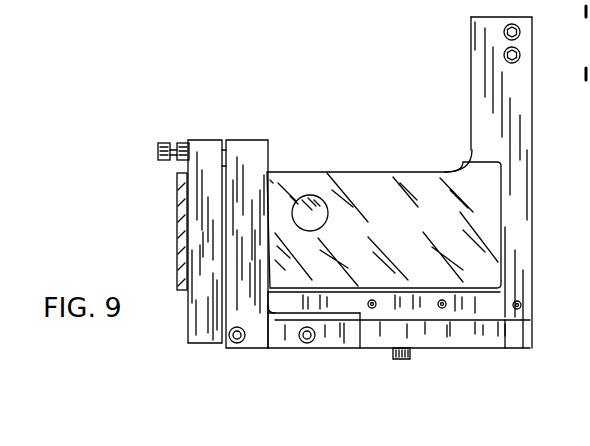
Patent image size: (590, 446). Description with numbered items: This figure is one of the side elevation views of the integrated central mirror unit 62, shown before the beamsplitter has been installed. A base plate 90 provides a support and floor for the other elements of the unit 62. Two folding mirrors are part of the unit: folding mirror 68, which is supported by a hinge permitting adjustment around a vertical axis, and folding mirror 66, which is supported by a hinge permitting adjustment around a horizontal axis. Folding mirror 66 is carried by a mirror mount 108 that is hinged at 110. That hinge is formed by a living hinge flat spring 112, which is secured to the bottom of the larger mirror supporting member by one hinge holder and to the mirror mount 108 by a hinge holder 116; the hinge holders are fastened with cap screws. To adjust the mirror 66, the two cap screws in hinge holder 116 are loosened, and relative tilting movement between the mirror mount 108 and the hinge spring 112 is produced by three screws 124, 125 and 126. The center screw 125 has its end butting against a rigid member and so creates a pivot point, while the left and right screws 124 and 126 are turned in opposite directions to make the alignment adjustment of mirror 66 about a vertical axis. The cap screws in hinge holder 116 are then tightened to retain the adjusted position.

The integrated central mirror unit 62 is at (314, 153).
The folding mirror 66 is at (373, 180).
The folding mirror 68 is at (180, 233).
The base plate 90 is at (350, 333).
The mirror mount 108 is at (516, 227).
The hinge 110 is at (429, 342).
The living hinge flat spring 112 is at (481, 322).
The hinge holder 116 is at (502, 337).
The screw 124 is at (372, 310).
The center screw 125 is at (442, 310).
The screw 126 is at (522, 305).